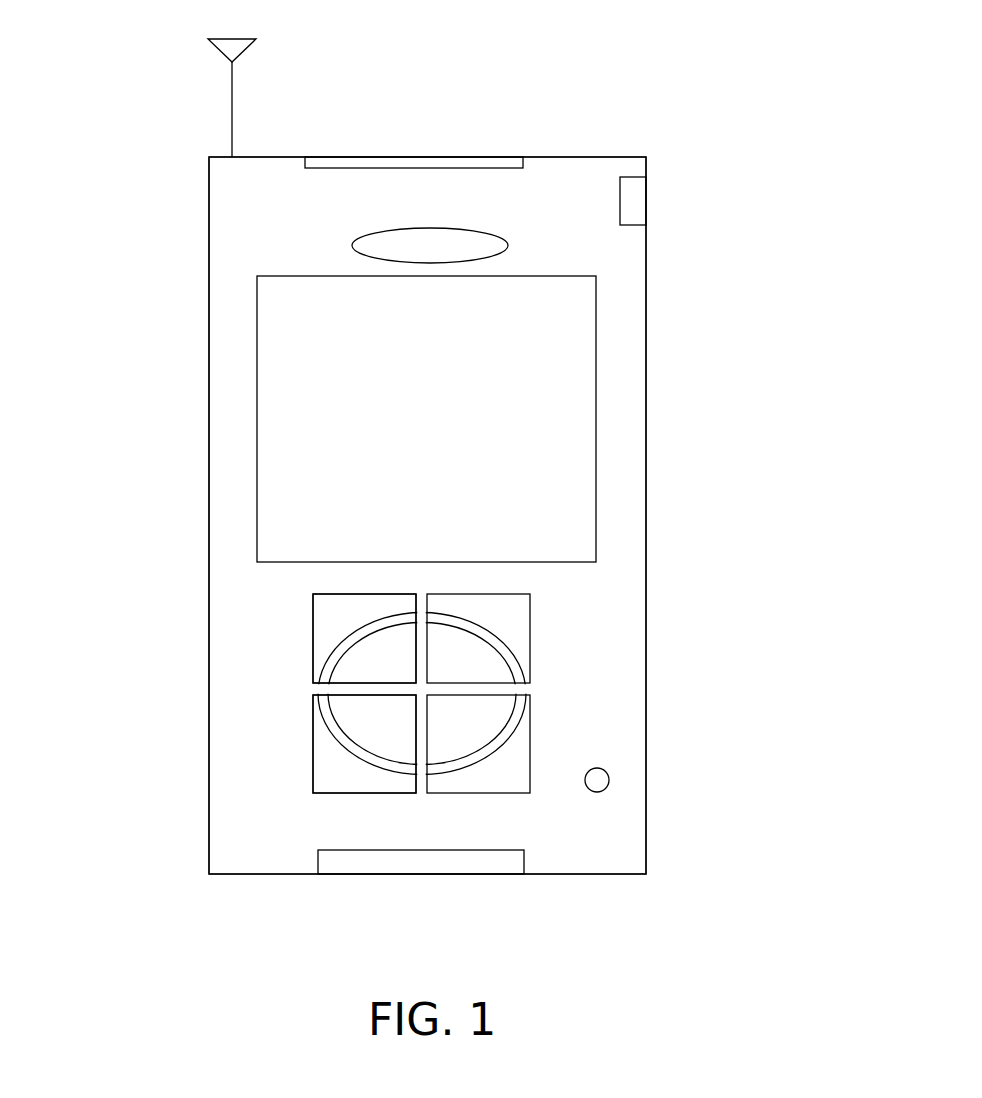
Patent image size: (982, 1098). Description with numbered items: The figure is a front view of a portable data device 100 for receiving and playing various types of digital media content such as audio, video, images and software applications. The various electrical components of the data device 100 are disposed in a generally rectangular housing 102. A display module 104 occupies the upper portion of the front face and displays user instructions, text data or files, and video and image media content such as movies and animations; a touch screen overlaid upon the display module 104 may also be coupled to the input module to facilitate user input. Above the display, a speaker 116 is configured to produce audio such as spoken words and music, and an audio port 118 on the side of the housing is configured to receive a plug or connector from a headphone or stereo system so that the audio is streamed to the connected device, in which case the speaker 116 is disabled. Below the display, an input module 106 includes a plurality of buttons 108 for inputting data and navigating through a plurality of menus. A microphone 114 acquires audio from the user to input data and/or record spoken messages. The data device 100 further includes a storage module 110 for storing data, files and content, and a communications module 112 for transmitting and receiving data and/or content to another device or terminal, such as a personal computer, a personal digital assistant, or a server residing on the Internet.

The portable data device 100 is at (790, 270).
The housing 102 is at (209, 203).
The display module 104 is at (596, 383).
The input module 106 is at (568, 705).
The buttons 108 is at (379, 657).
The storage module 110 is at (318, 862).
The communications module 112 is at (462, 157).
The microphone 114 is at (605, 771).
The speaker 116 is at (432, 228).
The audio port 118 is at (646, 201).